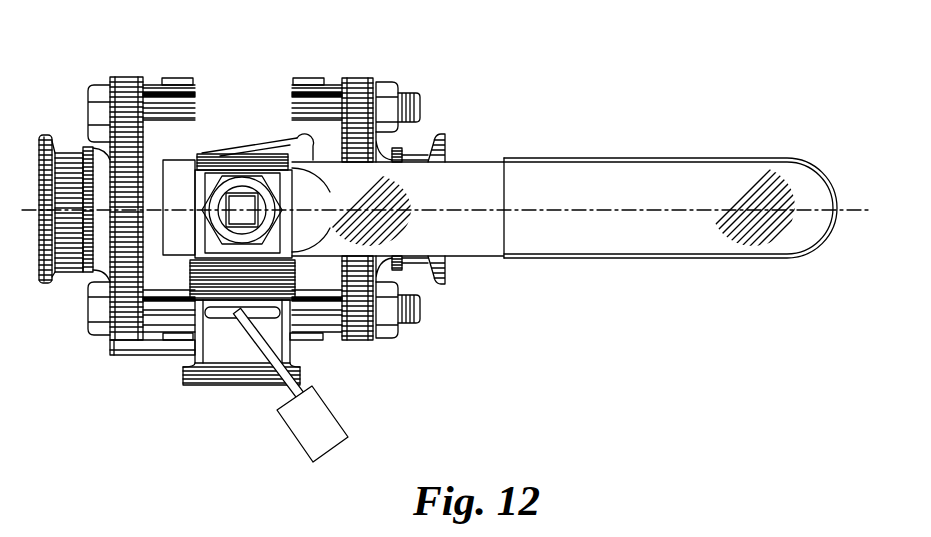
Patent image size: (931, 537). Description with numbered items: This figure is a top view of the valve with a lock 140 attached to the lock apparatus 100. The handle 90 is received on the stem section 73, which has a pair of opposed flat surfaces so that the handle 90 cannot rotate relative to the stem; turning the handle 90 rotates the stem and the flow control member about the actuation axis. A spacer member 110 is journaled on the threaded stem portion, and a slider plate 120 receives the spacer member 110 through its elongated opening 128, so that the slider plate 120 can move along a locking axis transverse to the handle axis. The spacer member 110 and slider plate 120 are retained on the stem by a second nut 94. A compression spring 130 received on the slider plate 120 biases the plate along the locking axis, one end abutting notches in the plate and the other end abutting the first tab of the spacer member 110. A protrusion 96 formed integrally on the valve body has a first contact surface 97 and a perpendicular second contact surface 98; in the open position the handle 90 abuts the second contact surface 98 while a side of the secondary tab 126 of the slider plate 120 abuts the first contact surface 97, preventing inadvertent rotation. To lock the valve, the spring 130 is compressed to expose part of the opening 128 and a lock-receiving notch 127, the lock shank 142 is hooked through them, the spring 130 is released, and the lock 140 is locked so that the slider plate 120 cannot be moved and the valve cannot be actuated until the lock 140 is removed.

The stem section 73 is at (240, 200).
The handle 90 is at (667, 158).
The second nut 94 is at (212, 202).
The protrusion 96 is at (303, 143).
The first contact surface 97 is at (282, 150).
The second contact surface 98 is at (335, 192).
The lock apparatus 100 is at (193, 392).
The spacer member 110 is at (268, 253).
The slider plate 120 is at (235, 387).
The secondary tab 126 is at (200, 150).
The lock-receiving notch 127 is at (226, 323).
The elongated opening 128 is at (270, 311).
The compression spring 130 is at (192, 277).
The lock 140 is at (332, 428).
The lock shank 142 is at (298, 370).